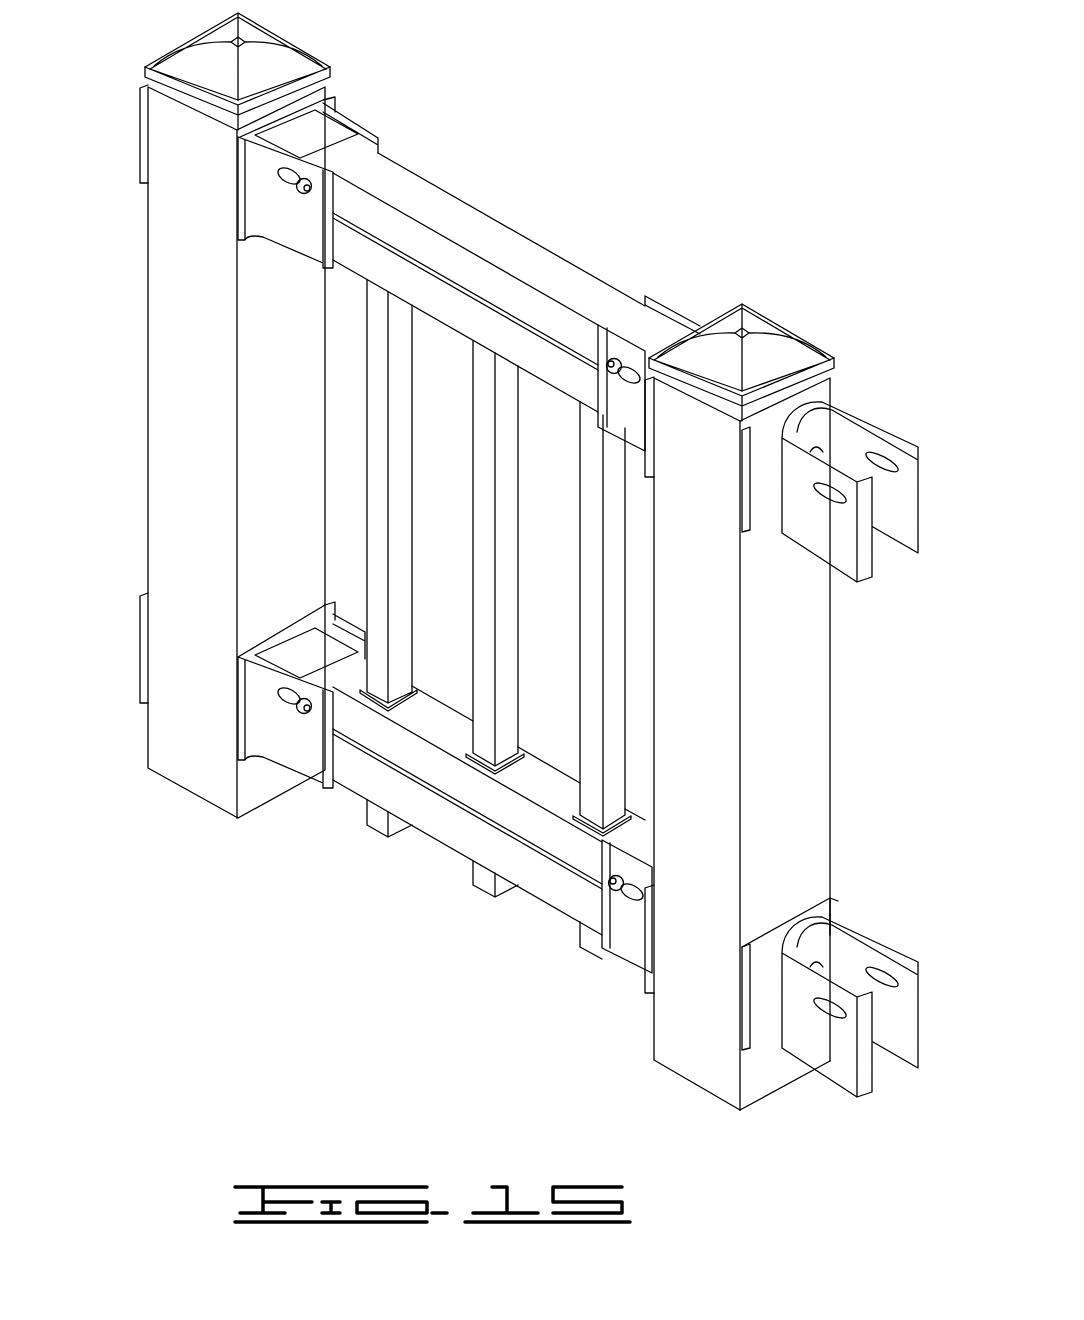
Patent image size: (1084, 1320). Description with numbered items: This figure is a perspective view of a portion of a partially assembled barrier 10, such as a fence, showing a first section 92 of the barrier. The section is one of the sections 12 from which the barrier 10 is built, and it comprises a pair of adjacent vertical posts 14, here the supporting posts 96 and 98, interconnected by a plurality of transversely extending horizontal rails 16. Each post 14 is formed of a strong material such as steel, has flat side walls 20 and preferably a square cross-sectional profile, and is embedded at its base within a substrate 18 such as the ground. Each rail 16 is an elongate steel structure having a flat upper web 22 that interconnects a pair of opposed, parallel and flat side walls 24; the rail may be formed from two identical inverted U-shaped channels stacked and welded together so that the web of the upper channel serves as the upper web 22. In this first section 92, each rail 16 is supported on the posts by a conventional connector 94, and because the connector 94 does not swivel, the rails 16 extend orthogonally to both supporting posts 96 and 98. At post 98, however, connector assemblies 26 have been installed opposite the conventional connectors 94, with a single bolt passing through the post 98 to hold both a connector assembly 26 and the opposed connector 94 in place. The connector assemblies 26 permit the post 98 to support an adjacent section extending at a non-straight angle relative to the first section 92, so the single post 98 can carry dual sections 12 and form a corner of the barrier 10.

The barrier 10 is at (682, 92).
The section 12 is at (540, 880).
The vertical post 14 is at (150, 345).
The horizontal rail 16 is at (548, 385).
The substrate 18 is at (296, 866).
The side wall 20 is at (262, 432).
The upper web 22 is at (570, 270).
The side wall 24 is at (445, 300).
The connector assembly 26 is at (865, 420).
The first section 92 is at (445, 205).
The conventional connector 94 is at (277, 212).
The supporting post 96 is at (165, 545).
The supporting post 98 is at (680, 1060).